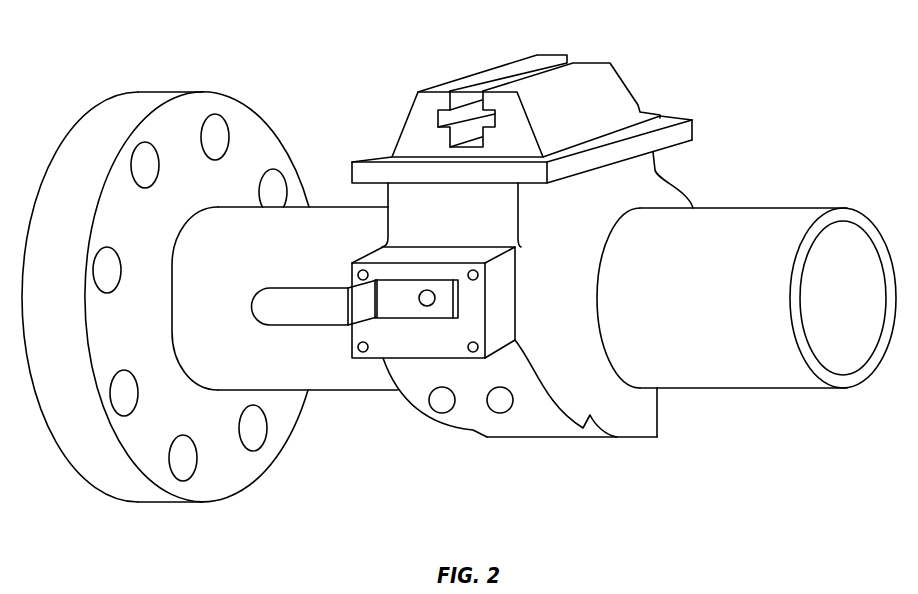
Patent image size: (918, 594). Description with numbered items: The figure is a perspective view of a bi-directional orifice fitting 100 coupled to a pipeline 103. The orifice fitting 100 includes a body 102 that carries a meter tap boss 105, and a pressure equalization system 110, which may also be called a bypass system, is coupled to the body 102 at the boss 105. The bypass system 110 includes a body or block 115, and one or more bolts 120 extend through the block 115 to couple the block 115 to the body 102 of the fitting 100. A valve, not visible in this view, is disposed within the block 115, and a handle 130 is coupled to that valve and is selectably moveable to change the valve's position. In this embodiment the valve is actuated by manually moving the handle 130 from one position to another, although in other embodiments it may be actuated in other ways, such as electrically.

The orifice fitting 100 is at (427, 66).
The body 102 is at (667, 180).
The pipeline 103 is at (766, 208).
The meter tap boss 105 is at (518, 240).
The pressure equalization system 110 is at (381, 364).
The block 115 is at (383, 258).
The bolts 120 is at (478, 274).
The handle 130 is at (283, 288).